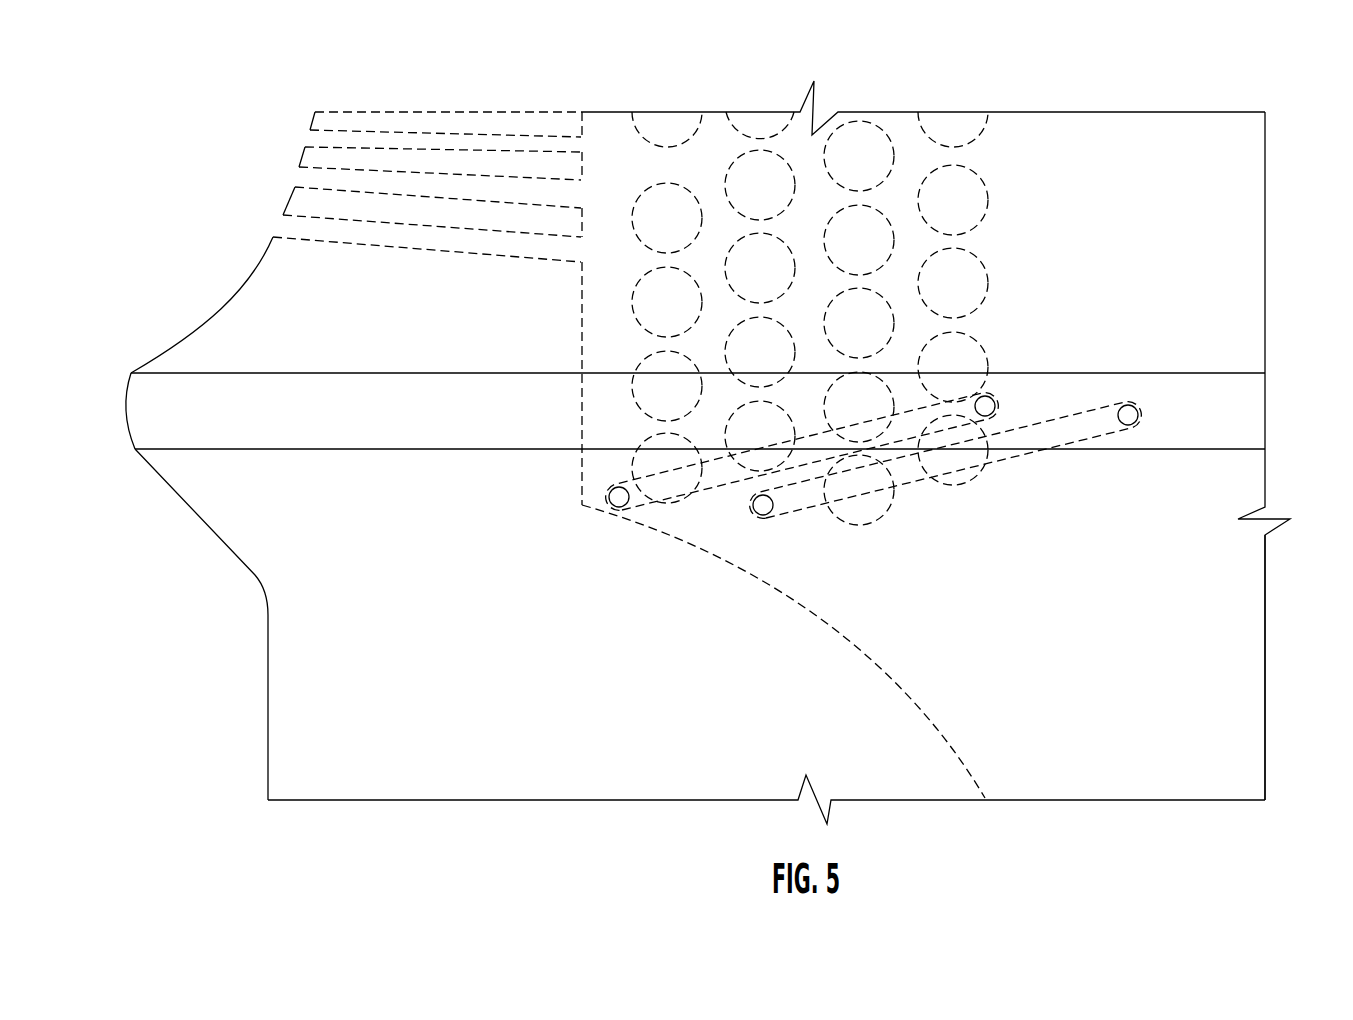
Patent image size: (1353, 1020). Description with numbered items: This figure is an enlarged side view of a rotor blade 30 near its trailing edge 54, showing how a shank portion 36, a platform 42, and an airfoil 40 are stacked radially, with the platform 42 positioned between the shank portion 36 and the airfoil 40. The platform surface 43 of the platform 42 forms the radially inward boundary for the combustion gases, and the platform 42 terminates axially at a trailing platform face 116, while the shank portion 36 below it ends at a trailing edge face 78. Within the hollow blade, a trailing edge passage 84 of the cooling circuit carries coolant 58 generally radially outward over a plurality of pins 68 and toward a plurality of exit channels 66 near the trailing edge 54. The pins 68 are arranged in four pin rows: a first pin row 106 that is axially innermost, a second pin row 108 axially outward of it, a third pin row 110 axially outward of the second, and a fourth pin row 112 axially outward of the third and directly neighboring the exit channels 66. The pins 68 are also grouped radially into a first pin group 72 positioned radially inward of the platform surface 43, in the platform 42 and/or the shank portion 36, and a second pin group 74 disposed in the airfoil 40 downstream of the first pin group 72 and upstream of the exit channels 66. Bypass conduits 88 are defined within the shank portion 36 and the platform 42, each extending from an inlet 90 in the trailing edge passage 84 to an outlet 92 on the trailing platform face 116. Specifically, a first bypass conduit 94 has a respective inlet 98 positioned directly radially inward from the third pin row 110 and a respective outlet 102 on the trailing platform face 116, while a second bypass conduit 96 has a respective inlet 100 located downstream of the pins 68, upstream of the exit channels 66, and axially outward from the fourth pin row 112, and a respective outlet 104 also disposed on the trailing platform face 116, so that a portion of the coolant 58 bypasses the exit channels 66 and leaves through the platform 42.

The rotor blade 30 is at (168, 49).
The shank portion 36 is at (115, 452).
The airfoil 40 is at (183, 280).
The platform 42 is at (115, 375).
The platform surface 43 is at (156, 375).
The trailing edge 54 is at (292, 198).
The coolant 58 is at (941, 553).
The exit channels 66 is at (291, 166).
The pins 68 is at (905, 106).
The first pin group 72 is at (633, 457).
The second pin group 74 is at (988, 199).
The trailing edge face 78 is at (327, 725).
The trailing edge passage 84 is at (1165, 174).
The bypass conduits 88 is at (874, 481).
The inlet 90 is at (654, 546).
The outlet 92 is at (1101, 408).
The first bypass conduit 94 is at (1017, 455).
The second bypass conduit 96 is at (799, 452).
The inlet of first bypass conduit 98 is at (748, 513).
The inlet of second bypass conduit 100 is at (604, 504).
The outlet of first bypass conduit 102 is at (1154, 424).
The outlet of second bypass conduit 104 is at (1006, 397).
The first pin row 106 is at (975, 128).
The second pin row 108 is at (868, 147).
The third pin row 110 is at (767, 165).
The fourth pin row 112 is at (664, 127).
The trailing platform face 116 is at (1248, 403).